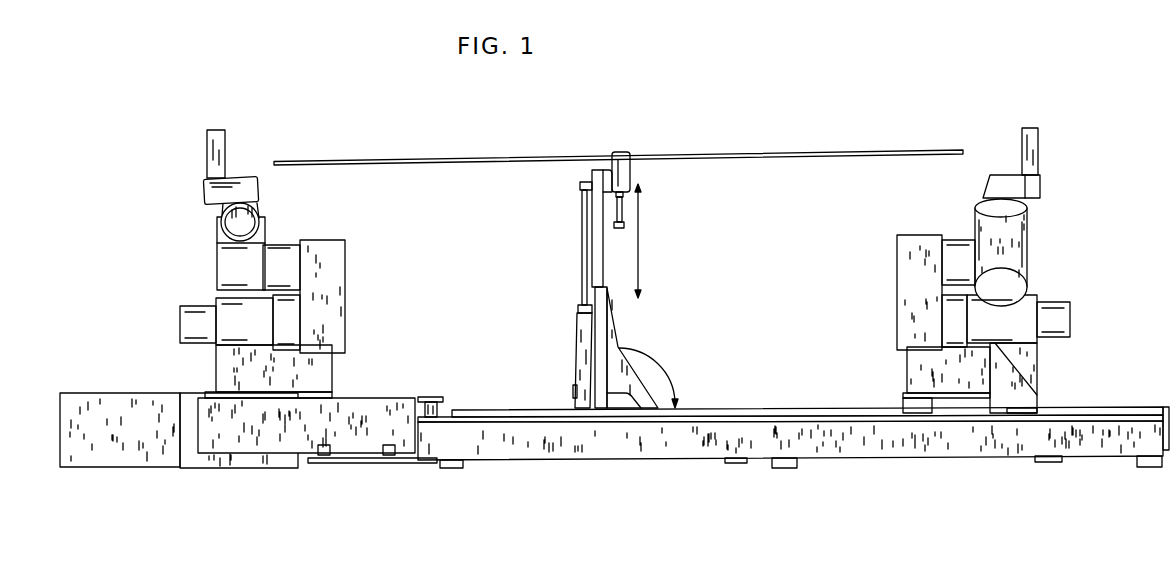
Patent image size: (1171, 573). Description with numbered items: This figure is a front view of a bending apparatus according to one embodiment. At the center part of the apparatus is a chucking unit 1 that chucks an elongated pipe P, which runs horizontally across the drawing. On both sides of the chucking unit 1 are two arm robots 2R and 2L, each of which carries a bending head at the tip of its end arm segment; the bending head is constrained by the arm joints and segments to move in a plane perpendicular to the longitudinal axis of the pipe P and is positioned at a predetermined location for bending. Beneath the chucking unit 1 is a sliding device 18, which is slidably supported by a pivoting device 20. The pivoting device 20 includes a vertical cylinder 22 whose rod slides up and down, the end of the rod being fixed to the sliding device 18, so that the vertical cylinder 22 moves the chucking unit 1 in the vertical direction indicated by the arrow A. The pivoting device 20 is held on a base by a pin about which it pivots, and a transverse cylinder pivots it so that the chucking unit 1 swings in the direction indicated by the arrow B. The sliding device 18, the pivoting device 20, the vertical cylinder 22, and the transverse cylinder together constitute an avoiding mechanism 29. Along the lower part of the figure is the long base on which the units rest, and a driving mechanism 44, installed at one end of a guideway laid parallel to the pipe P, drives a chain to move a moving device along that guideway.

The elongated pipe P is at (782, 150).
The chucking unit 1 is at (624, 176).
The arm robot 2L is at (318, 300).
The arm robot 2R is at (997, 251).
The sliding device 18 is at (595, 233).
The pivoting device 20 is at (611, 335).
The vertical cylinder 22 is at (576, 325).
The avoiding mechanism 29 is at (566, 313).
The driving mechanism 44 is at (245, 436).
The arrow indicating vertical direction A is at (645, 241).
The arrow indicating pivoting direction B is at (648, 375).